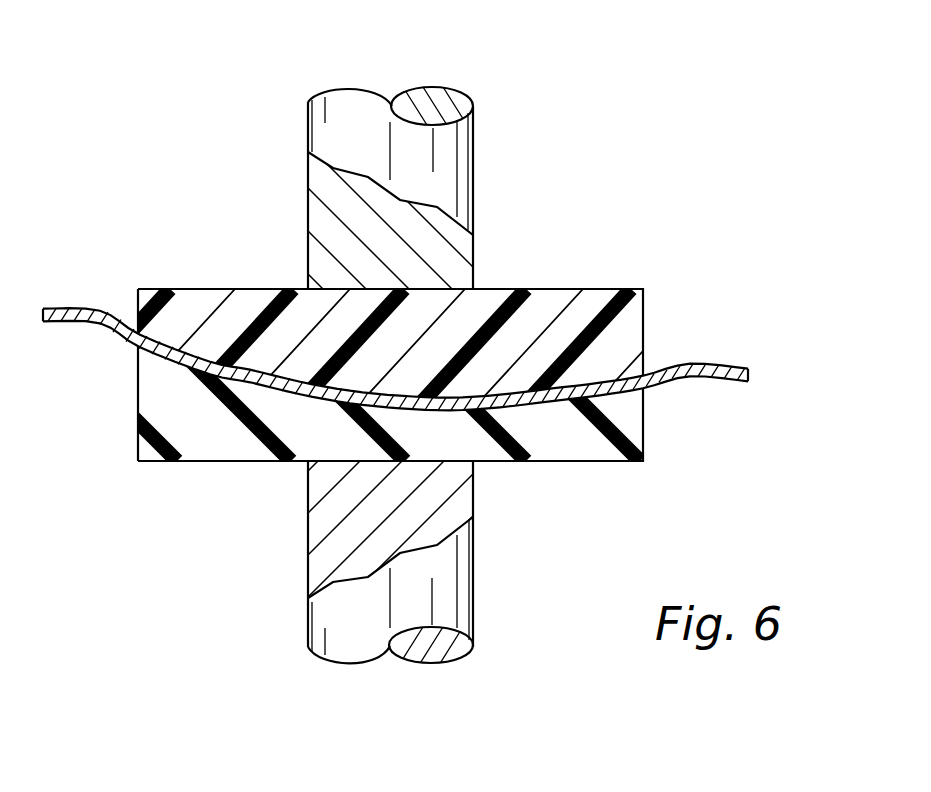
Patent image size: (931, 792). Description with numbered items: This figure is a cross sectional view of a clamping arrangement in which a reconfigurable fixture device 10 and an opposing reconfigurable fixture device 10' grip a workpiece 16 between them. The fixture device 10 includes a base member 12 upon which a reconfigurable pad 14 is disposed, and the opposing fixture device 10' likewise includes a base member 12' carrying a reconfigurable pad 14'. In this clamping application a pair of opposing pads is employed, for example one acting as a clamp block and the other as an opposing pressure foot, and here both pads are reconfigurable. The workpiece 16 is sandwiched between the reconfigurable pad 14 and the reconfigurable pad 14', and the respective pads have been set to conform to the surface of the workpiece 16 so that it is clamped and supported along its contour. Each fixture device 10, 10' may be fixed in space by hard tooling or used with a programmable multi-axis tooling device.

The reconfigurable fixture device 10 is at (202, 599).
The reconfigurable fixture device 10' is at (190, 152).
The base member 12 is at (290, 563).
The base member 12' is at (355, 188).
The reconfigurable pad 14 is at (324, 375).
The reconfigurable pad 14' is at (387, 358).
The workpiece 16 is at (693, 380).